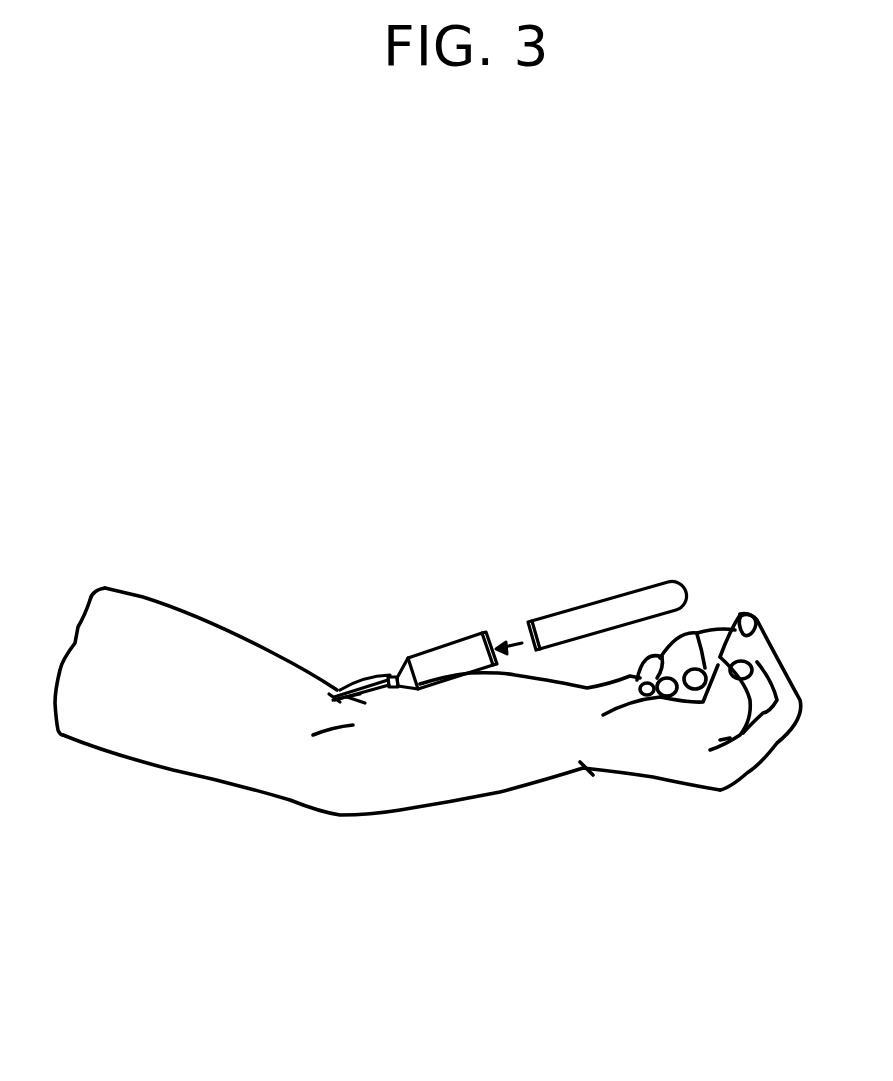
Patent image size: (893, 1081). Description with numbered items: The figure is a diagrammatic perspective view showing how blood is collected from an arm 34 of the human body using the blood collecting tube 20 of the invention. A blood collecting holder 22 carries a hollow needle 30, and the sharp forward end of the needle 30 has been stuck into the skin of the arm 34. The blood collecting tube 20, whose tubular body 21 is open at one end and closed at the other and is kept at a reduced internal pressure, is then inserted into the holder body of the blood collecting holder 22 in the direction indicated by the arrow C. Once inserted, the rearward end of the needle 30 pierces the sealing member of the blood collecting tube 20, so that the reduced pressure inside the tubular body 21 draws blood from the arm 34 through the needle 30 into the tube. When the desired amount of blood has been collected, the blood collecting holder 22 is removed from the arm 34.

The blood collecting tube 20 is at (452, 443).
The tubular body 21 is at (620, 597).
The blood collecting holder 22 is at (442, 653).
The hollow needle 30 is at (360, 677).
The arm 34 is at (428, 787).
The arrow indicating insertion direction C is at (508, 644).